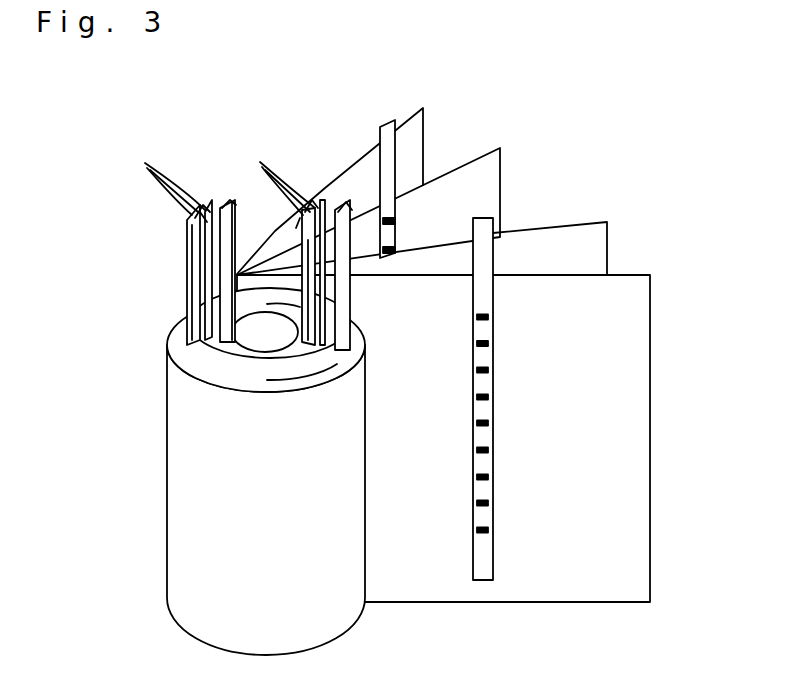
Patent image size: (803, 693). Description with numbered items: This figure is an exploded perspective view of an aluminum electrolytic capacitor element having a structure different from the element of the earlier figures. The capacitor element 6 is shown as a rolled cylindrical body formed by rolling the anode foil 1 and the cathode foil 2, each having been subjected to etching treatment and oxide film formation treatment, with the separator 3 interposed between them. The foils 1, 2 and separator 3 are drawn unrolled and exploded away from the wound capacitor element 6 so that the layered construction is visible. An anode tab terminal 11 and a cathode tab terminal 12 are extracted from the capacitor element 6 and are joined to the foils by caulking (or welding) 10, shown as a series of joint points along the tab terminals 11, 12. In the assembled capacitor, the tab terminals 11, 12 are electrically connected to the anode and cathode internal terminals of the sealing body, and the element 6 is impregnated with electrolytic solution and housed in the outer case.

The anode foil 1 is at (477, 177).
The cathode foil 2 is at (609, 336).
The separator 3 is at (413, 128).
The capacitor element 6 is at (183, 448).
The caulking (or welding) 10 is at (396, 250).
The anode tab terminal 11 is at (392, 121).
The cathode tab terminal 12 is at (597, 187).